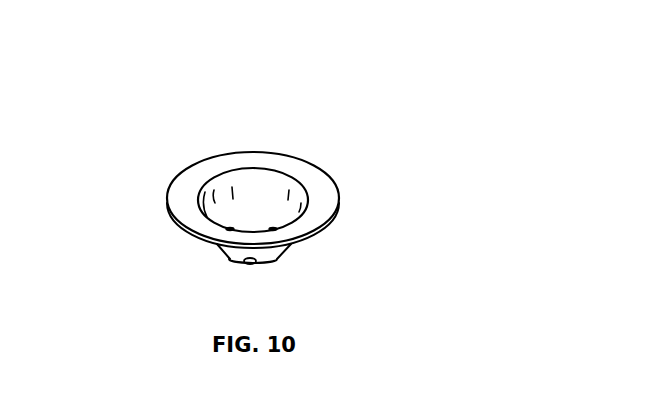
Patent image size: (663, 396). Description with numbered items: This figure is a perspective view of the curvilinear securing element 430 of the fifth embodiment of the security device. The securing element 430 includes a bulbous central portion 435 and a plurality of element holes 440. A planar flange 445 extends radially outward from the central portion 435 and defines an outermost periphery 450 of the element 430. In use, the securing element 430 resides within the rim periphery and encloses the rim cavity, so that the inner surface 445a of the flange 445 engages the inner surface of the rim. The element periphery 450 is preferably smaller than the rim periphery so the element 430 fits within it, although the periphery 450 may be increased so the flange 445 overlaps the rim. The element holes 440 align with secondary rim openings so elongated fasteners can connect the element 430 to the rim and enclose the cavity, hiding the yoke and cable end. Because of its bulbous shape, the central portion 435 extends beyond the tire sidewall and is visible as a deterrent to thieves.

The securing element 430 is at (295, 189).
The bulbous central portion 435 is at (247, 202).
The element holes 440 is at (252, 264).
The planar flange 445 is at (257, 167).
The inner surface of the flange 445a is at (182, 202).
The outermost periphery 450 is at (187, 166).